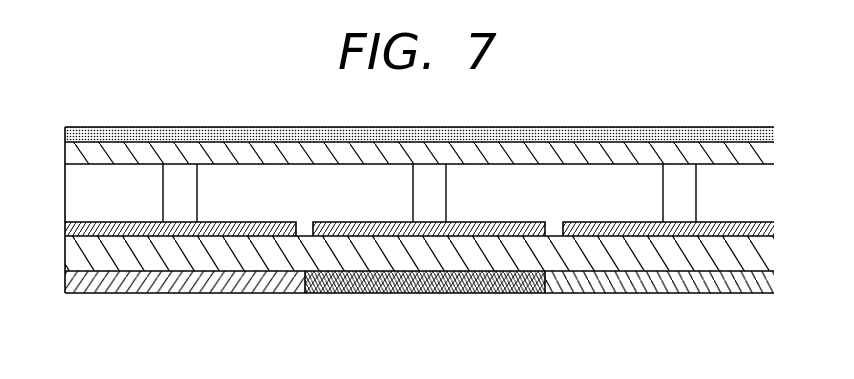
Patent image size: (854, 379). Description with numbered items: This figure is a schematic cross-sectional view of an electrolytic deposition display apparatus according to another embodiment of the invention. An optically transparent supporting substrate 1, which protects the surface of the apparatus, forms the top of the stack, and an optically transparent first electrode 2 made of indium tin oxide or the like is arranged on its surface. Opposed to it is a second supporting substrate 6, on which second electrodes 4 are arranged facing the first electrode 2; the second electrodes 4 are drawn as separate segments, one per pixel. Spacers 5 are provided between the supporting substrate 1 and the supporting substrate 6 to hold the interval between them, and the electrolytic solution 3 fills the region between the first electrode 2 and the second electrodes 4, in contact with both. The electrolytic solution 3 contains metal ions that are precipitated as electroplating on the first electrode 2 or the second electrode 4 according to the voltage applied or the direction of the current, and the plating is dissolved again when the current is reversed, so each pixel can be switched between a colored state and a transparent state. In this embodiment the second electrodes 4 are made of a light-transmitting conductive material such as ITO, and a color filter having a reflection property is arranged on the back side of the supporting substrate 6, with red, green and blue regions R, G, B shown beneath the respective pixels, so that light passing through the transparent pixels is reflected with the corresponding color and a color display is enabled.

The supporting substrate 1 is at (66, 134).
The first electrode 2 is at (69, 158).
The electrolytic solution 3 is at (69, 196).
The second electrode 4 is at (271, 222).
The spacers 5 is at (193, 190).
The supporting substrate 6 is at (69, 262).
The red pixel region R is at (177, 292).
The green pixel region G is at (425, 292).
The blue pixel region B is at (656, 292).